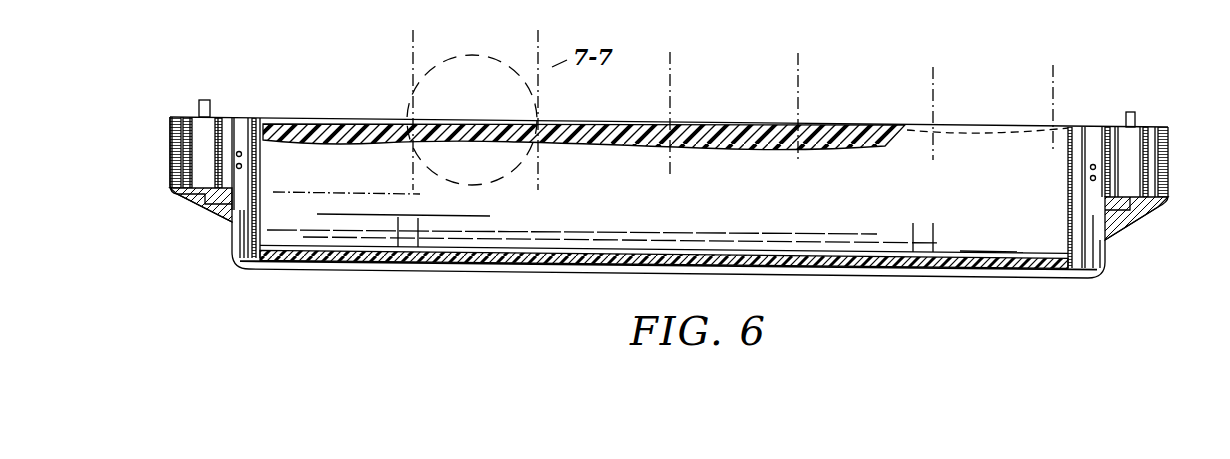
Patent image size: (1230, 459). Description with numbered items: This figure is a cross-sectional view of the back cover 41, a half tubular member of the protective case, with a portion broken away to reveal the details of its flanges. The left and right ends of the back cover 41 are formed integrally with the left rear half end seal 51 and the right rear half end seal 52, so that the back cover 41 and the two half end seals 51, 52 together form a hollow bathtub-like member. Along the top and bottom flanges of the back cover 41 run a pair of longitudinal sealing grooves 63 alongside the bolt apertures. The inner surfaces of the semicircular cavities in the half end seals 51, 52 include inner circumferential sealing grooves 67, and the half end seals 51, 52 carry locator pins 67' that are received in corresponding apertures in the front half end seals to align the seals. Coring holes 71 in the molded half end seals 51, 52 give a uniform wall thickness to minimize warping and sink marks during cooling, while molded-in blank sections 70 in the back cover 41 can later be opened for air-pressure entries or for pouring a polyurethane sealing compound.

The back cover 41 is at (712, 275).
The left rear half end seal 51 is at (170, 183).
The right rear half end seal 52 is at (1166, 189).
The longitudinal sealing grooves 63 is at (745, 125).
The inner circumferential sealing grooves 67 is at (669, 172).
The locator pins 67' is at (693, 91).
The molded-in blank sections 70 is at (413, 233).
The coring holes 71 is at (260, 157).